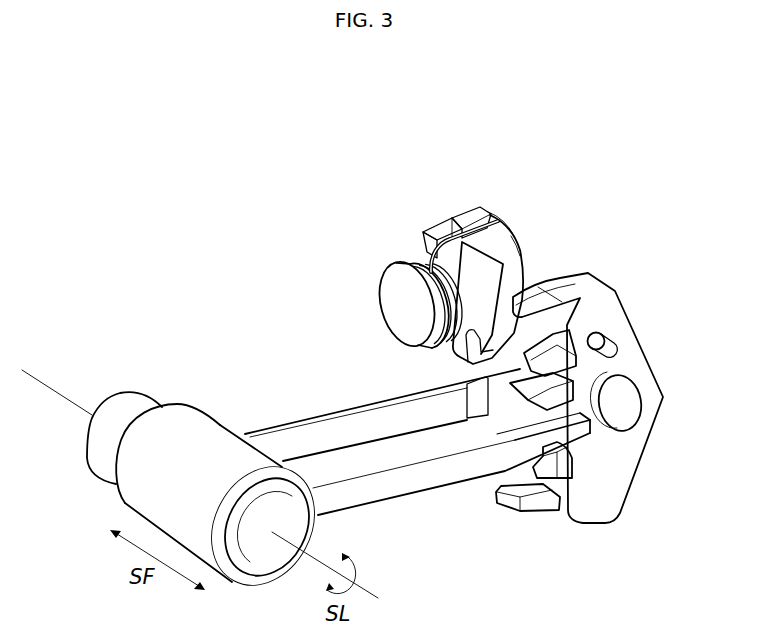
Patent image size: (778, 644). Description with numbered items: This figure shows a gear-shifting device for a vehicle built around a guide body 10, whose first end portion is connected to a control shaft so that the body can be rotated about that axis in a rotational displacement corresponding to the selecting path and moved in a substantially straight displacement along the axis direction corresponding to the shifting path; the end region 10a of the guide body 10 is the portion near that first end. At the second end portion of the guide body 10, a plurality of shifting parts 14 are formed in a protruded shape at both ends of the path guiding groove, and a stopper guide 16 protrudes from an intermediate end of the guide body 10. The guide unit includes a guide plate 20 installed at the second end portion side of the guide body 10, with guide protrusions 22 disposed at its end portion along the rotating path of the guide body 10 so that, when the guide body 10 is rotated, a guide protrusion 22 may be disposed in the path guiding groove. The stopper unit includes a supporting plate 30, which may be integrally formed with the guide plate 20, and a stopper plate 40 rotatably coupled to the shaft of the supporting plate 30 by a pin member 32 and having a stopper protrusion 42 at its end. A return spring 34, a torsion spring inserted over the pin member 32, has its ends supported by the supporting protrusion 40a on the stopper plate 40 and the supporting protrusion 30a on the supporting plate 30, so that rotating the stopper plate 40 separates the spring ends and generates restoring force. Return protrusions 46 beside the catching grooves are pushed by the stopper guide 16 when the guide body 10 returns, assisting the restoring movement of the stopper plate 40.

The guide body 10 is at (380, 510).
The knob 10a is at (127, 416).
The shifting parts 14 is at (582, 430).
The stopper guide 16 is at (477, 398).
The guide plate 20 is at (630, 443).
The guide protrusion 22 is at (558, 360).
The supporting plate 30 is at (467, 275).
The supporting protrusion 30a is at (440, 224).
The pin member 32 is at (398, 303).
The return spring 34 is at (417, 258).
The stopper plate 40 is at (495, 270).
The supporting protrusion 40a is at (466, 215).
The stopper protrusion 42 is at (483, 352).
The return protrusions 46 is at (573, 290).